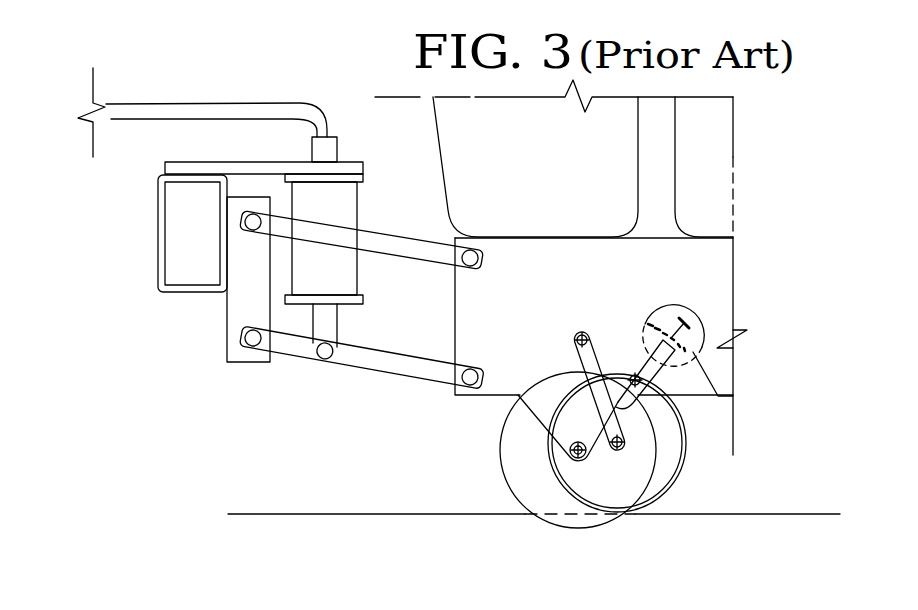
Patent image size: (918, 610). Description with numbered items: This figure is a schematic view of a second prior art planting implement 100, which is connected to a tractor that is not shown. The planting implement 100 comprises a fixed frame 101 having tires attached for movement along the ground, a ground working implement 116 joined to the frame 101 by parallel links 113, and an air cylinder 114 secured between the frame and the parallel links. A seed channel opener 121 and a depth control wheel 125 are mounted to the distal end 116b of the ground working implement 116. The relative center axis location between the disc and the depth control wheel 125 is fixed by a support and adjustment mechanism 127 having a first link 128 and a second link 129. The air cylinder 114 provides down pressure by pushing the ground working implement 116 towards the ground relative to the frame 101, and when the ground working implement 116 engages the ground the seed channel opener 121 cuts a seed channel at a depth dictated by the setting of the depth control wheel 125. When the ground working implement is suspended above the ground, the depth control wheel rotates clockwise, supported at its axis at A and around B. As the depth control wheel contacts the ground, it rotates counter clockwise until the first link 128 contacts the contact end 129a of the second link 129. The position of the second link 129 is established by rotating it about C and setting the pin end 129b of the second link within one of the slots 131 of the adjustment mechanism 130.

The planting implement 100 is at (139, 446).
The fixed frame 101 is at (158, 232).
The parallel links 113 is at (400, 260).
The air cylinder 114 is at (292, 278).
The ground working implement 116 is at (453, 330).
The distal end of the ground working implement 116b is at (570, 427).
The seed channel opener 121 is at (602, 528).
The depth control wheel 125 is at (684, 447).
The support and adjustment mechanism 127 is at (625, 332).
The first link 128 is at (560, 373).
The second link 129 is at (641, 381).
The contact end of the second link 129a is at (622, 432).
The pin end of the second link 129b is at (495, 393).
The adjustment mechanism 130 is at (693, 307).
The slots 131 is at (747, 330).
The axis of the depth control wheel A is at (622, 447).
The pivot point B is at (580, 337).
The rotation point of the second link C is at (658, 395).